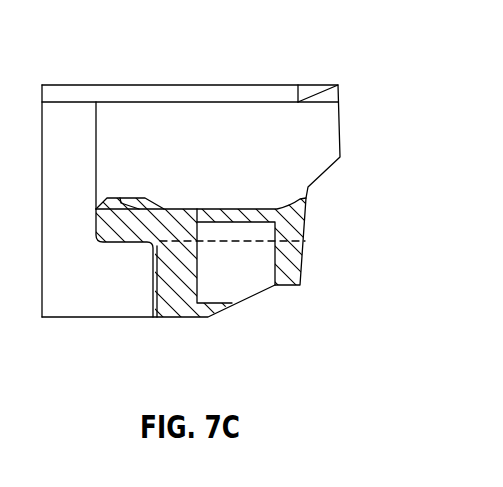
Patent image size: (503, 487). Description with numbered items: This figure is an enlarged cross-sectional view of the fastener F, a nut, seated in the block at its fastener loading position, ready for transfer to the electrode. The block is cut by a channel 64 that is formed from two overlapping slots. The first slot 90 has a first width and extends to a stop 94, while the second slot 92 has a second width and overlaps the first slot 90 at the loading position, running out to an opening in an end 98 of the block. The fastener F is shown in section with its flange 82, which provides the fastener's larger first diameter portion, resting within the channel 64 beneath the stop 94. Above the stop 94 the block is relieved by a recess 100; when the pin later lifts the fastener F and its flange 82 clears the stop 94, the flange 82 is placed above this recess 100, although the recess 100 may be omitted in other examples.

The channel 64 is at (312, 140).
The flange 82 is at (126, 233).
The first slot 90 is at (245, 166).
The second slot 92 is at (233, 245).
The stop 94 is at (97, 115).
The end 98 is at (42, 182).
The recess 100 is at (211, 98).
The fastener F is at (167, 310).